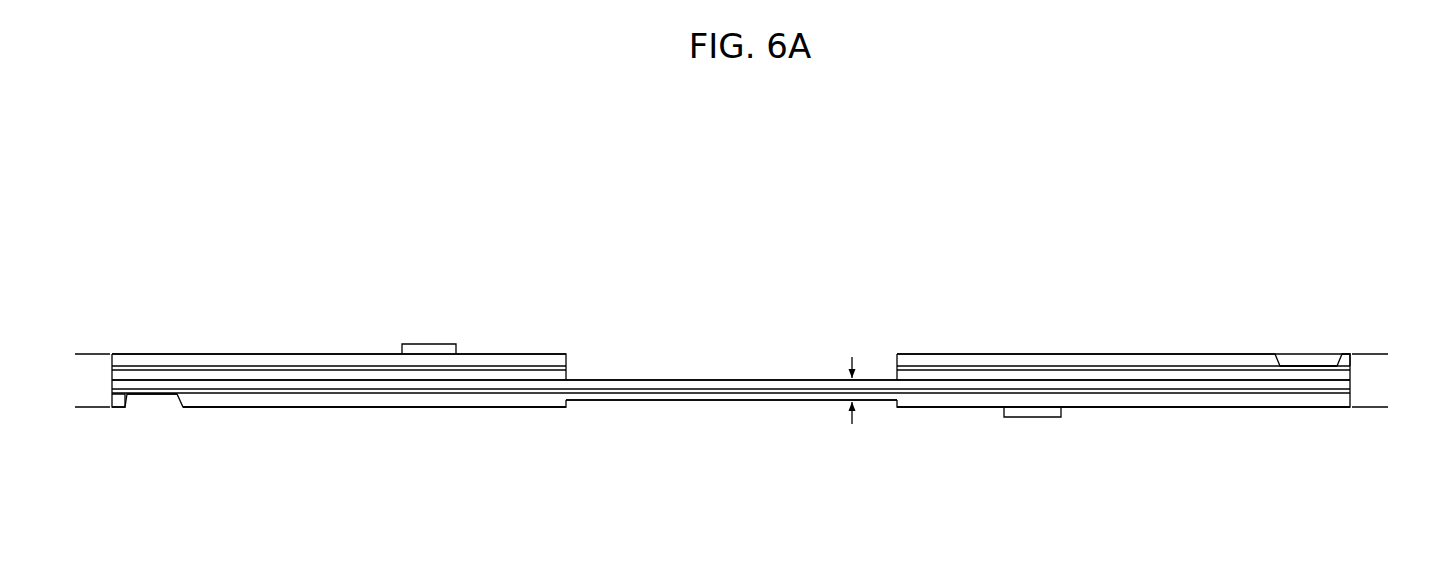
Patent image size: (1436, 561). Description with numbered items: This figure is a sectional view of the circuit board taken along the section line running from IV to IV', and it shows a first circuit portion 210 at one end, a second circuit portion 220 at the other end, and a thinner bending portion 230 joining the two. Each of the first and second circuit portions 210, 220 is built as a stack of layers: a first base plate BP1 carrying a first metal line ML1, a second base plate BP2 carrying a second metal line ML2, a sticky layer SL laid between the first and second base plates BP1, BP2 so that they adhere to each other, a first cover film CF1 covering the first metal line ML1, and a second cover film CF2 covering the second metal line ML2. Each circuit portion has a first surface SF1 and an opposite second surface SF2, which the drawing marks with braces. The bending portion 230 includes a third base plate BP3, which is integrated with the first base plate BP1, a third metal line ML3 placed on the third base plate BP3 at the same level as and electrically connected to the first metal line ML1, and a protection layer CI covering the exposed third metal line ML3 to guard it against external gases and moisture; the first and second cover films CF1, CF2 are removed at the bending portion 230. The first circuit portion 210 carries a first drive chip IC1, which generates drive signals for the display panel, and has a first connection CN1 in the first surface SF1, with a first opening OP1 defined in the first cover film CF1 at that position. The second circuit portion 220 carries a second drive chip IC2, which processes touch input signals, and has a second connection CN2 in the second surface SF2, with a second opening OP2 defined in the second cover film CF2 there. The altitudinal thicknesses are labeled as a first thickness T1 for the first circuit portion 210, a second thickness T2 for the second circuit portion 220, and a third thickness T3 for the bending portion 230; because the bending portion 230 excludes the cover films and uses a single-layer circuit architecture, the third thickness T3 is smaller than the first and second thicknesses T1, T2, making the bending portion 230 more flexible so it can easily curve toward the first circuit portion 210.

The first circuit portion 210 is at (174, 342).
The second circuit portion 220 is at (1289, 413).
The bending portion 230 is at (745, 375).
The first cover film CF1 is at (462, 402).
The second cover film CF2 is at (240, 360).
The first metal line ML1 is at (388, 392).
The second metal line ML2 is at (293, 368).
The third metal line ML3 is at (725, 400).
The first base plate BP1 is at (322, 388).
The second base plate BP2 is at (350, 376).
The third base plate BP3 is at (662, 400).
The sticky layer SL is at (262, 385).
The protection layer CI is at (787, 400).
The first drive chip IC1 is at (430, 347).
The second drive chip IC2 is at (1032, 414).
The first connection CN1 is at (150, 407).
The second connection CN2 is at (1314, 352).
The first opening OP1 is at (181, 400).
The second opening OP2 is at (1282, 362).
The first surface SF1 is at (533, 409).
The second surface SF2 is at (533, 352).
The first thickness T1 is at (85, 356).
The second thickness T2 is at (1378, 356).
The third thickness T3 is at (865, 390).
The section line IV is at (102, 433).
The section line IV' is at (1358, 433).